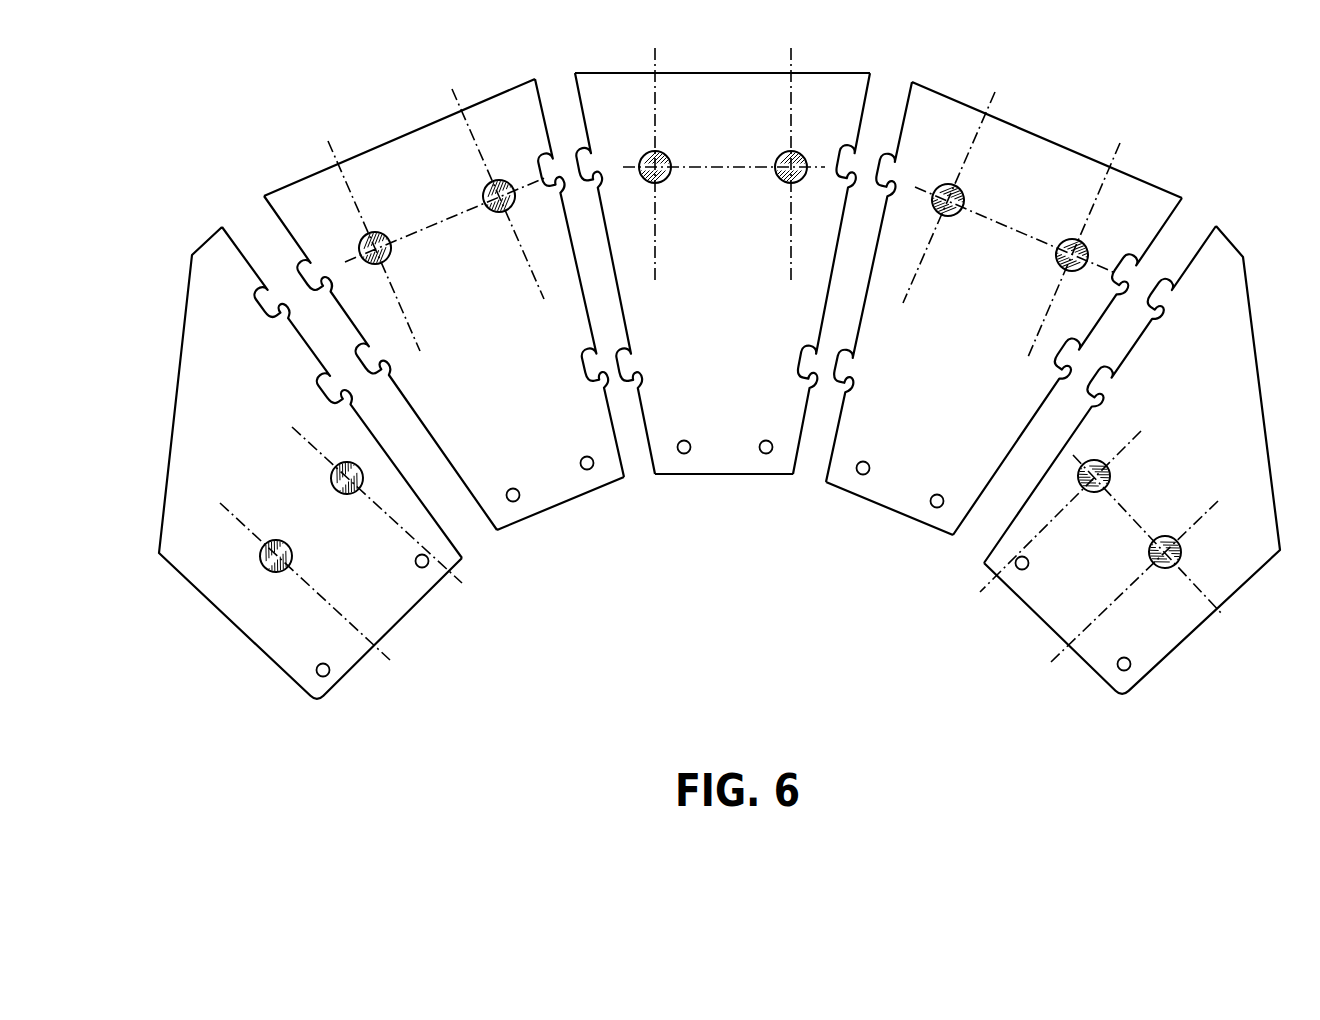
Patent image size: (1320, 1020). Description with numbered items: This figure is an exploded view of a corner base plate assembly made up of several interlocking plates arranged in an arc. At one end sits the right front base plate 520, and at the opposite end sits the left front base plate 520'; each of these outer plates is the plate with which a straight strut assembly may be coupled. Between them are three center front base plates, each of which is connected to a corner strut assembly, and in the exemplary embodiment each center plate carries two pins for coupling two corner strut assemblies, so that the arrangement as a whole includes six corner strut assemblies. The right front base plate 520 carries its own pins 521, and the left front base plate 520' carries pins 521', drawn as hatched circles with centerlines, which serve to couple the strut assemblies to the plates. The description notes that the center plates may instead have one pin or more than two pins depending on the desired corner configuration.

The right front base plate 520 is at (1130, 460).
The left front base plate 520' is at (310, 463).
The pin 521 is at (1135, 506).
The pin 521' is at (311, 516).